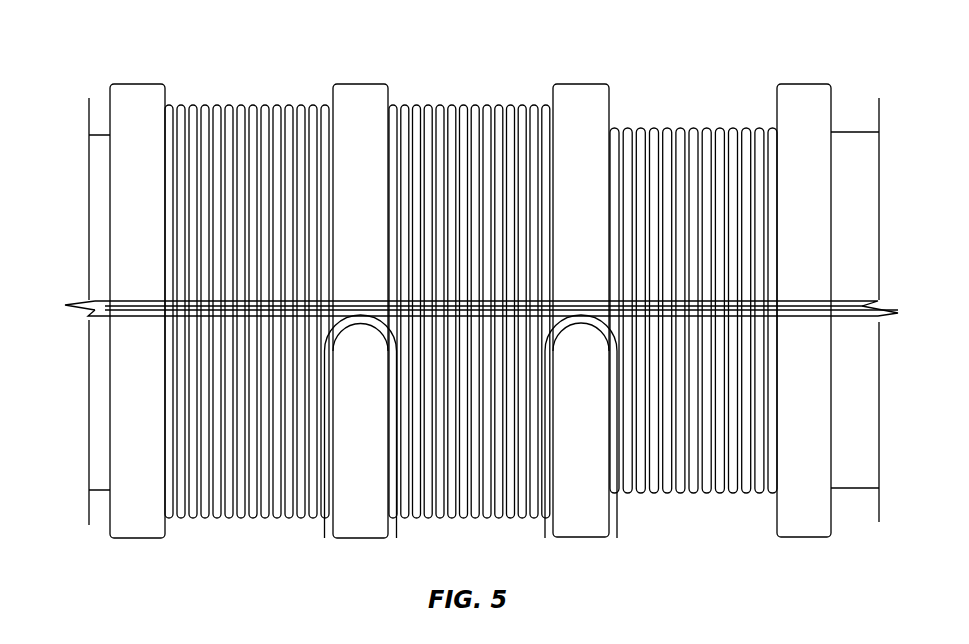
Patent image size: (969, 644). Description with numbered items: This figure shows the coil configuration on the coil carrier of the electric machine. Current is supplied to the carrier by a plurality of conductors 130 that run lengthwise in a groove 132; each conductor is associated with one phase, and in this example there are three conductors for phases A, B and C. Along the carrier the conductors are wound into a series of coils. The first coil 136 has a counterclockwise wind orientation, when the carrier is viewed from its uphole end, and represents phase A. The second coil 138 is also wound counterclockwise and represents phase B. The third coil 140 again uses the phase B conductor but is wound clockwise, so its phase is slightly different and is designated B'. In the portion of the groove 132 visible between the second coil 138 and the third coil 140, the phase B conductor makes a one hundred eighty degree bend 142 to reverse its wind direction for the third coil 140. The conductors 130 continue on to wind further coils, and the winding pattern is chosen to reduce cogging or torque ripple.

The conductors 130 is at (100, 304).
The groove 132 is at (118, 318).
The first coil 136 is at (255, 105).
The second coil 138 is at (478, 105).
The third coil 140 is at (722, 128).
The 180 degree bend 142 is at (580, 300).